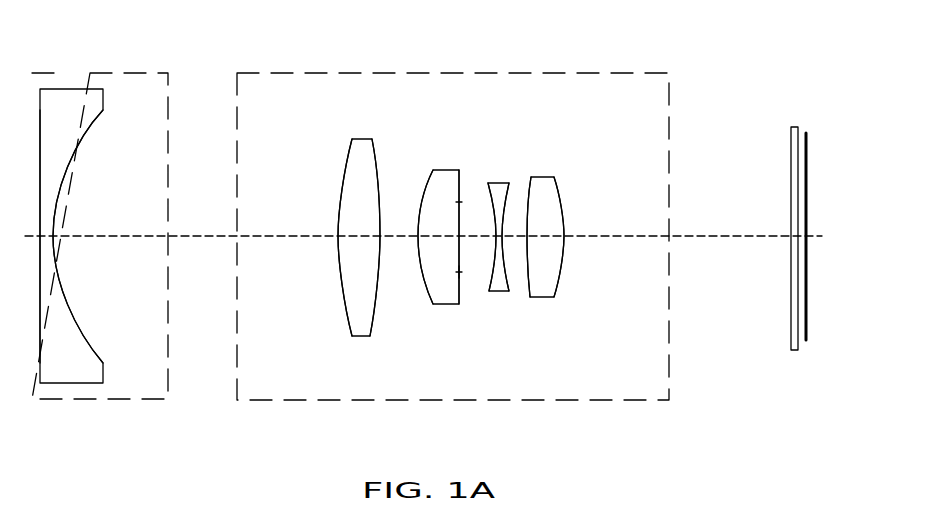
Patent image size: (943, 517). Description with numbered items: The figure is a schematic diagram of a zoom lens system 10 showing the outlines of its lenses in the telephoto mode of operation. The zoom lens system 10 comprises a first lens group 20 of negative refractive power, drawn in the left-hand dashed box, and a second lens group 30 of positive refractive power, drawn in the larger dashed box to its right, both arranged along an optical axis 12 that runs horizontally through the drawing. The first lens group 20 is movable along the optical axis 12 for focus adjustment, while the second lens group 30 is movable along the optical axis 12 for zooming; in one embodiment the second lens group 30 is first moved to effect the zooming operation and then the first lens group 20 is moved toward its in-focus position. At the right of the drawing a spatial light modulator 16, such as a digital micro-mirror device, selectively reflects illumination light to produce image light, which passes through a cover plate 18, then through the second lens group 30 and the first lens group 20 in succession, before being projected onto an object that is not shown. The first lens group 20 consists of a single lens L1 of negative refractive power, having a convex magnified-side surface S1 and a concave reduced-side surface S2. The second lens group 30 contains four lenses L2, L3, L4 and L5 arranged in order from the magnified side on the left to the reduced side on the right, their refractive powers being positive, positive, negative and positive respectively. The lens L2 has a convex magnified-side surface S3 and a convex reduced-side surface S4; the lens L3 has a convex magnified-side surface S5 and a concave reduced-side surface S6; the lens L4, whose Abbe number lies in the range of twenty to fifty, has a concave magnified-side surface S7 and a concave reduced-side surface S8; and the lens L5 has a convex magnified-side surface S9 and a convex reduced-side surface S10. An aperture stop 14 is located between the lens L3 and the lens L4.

The zoom lens system 10 is at (68, 28).
The optical axis 12 is at (705, 236).
The aperture stop 14 is at (458, 202).
The spatial light modulator 16 is at (805, 340).
The cover plate 18 is at (791, 148).
The first lens group 20 is at (103, 72).
The second lens group 30 is at (450, 72).
The lens L1 is at (75, 128).
The lens L2 is at (362, 143).
The lens L3 is at (445, 177).
The lens L4 is at (498, 190).
The lens L5 is at (545, 182).
The magnified-side surface of lens L1 S1 is at (40, 363).
The reduced-side surface of lens L1 S2 is at (95, 350).
The magnified-side surface of lens L2 S3 is at (345, 315).
The reduced-side surface of lens L2 S4 is at (378, 323).
The magnified-side surface of lens L3 S5 is at (420, 273).
The reduced-side surface of lens L3 S6 is at (457, 298).
The magnified-side surface of lens L4 S7 is at (490, 278).
The reduced-side surface of lens L4 S8 is at (503, 280).
The magnified-side surface of lens L5 S9 is at (527, 292).
The reduced-side surface of lens L5 S10 is at (555, 292).